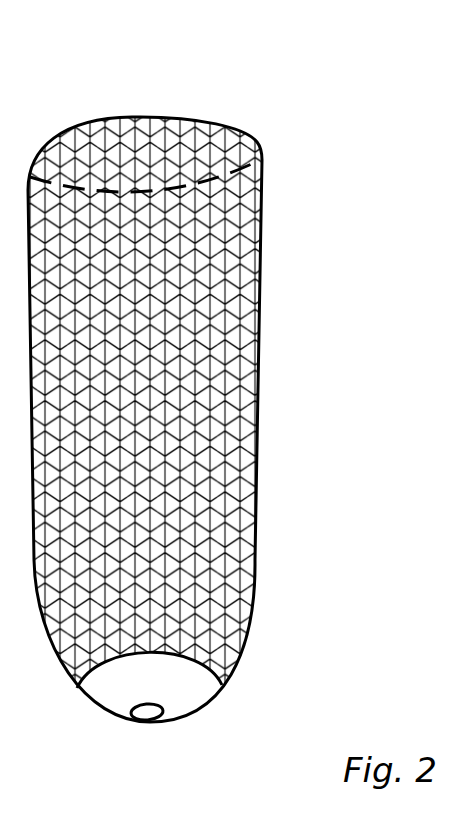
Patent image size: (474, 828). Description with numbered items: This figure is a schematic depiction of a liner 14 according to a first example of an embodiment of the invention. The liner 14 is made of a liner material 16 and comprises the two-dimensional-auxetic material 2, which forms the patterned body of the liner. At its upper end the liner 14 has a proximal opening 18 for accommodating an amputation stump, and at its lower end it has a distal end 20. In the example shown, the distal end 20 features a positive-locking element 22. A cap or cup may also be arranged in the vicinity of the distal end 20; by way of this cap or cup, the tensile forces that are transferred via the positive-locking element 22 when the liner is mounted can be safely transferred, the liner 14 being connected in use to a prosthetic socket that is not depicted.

The two-dimensional-auxetic material 2 is at (185, 397).
The liner 14 is at (318, 221).
The liner material 16 is at (243, 583).
The proximal opening 18 is at (176, 101).
The distal end 20 is at (200, 688).
The positive-locking element 22 is at (135, 718).